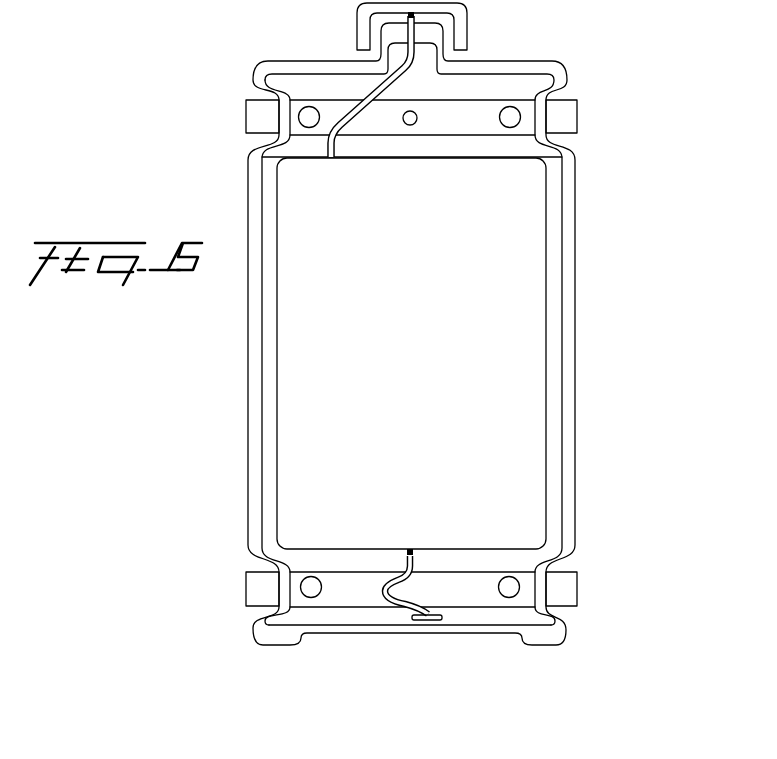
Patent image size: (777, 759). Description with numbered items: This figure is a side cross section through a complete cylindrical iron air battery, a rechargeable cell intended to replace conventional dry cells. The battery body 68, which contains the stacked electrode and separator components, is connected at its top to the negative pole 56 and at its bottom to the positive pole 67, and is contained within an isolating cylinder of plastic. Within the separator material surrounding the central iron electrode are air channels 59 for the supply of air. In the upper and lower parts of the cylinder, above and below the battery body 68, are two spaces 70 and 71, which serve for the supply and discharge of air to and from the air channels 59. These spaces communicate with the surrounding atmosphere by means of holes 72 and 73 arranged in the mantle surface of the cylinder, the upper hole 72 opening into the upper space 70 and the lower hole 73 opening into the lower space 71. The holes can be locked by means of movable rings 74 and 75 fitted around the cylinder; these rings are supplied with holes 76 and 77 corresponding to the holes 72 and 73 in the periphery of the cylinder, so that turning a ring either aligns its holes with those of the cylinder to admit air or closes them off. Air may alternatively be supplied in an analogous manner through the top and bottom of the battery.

The negative pole 56 is at (458, 35).
The air channels 59 is at (567, 244).
The positive pole 67 is at (460, 625).
The battery body 68 is at (522, 392).
The space 70 is at (502, 151).
The space 71 is at (492, 562).
The hole 72 is at (517, 115).
The hole 73 is at (513, 585).
The movable ring 74 is at (255, 592).
The movable ring 75 is at (253, 120).
The hole 76 is at (313, 596).
The hole 77 is at (308, 107).